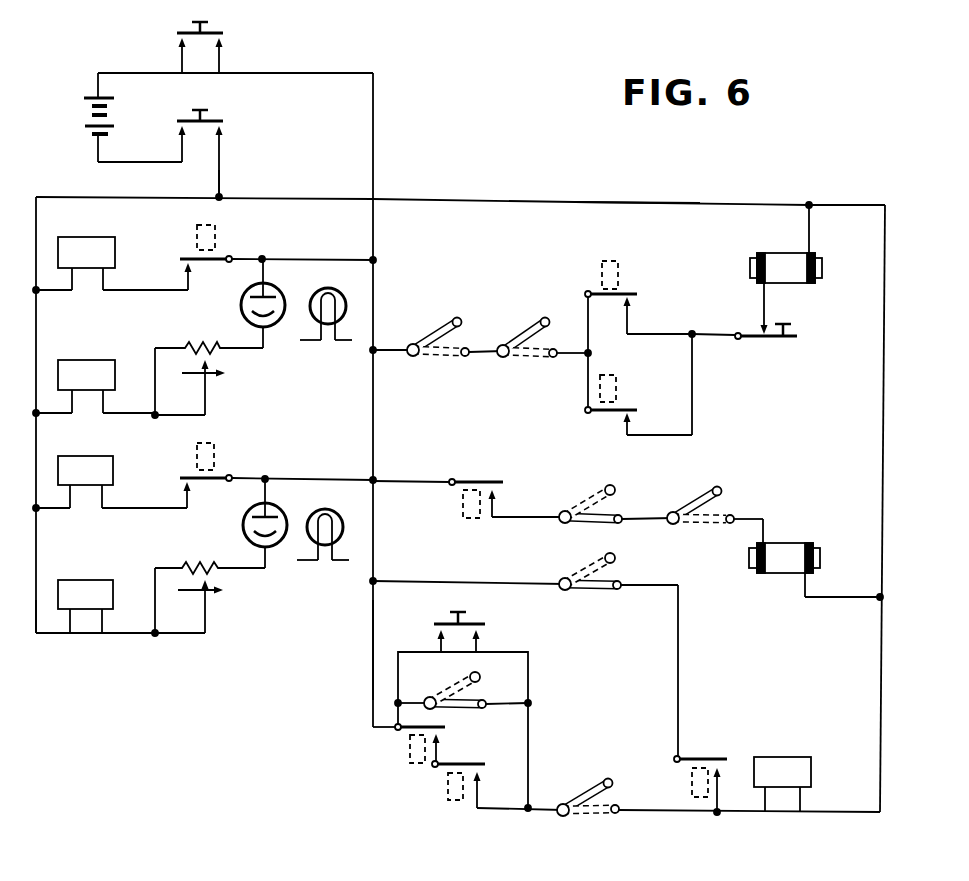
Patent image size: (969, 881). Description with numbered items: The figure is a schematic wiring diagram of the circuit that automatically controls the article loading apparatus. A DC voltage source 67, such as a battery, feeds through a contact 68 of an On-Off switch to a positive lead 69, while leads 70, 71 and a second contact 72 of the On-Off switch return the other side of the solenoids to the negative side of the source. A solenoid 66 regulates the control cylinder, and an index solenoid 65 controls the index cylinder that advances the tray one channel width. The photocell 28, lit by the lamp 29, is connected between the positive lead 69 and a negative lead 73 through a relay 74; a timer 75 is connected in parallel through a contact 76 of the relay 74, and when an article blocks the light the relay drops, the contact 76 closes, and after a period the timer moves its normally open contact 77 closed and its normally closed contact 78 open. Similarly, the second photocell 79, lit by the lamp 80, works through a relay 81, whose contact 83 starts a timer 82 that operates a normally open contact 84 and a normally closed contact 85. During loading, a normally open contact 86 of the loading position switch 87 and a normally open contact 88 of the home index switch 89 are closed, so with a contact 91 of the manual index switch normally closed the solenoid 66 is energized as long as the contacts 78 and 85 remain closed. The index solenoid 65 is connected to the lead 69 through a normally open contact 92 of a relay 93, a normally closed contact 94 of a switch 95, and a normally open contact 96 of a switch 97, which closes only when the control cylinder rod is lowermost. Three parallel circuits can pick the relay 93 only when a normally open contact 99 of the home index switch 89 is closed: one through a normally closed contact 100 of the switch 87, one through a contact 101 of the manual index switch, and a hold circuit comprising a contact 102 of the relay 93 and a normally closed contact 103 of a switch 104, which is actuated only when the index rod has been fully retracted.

The photocell 28 is at (244, 525).
The lamp 29 is at (330, 511).
The solenoid 65 is at (785, 542).
The solenoid 66 is at (790, 252).
The DC voltage source 67 is at (86, 122).
The contact 68 is at (217, 33).
The positive lead 69 is at (371, 642).
The lead 70 is at (575, 202).
The lead 71 is at (219, 175).
The second contact 72 is at (213, 121).
The negative lead 73 is at (36, 633).
The relay 74 is at (87, 582).
The timer 75 is at (87, 460).
The contact 76 is at (186, 476).
The normally open contact 77 is at (469, 764).
The normally closed contact 78 is at (623, 413).
The second photocell 79 is at (242, 296).
The lamp 80 is at (331, 289).
The relay 81 is at (90, 364).
The timer 82 is at (92, 242).
The contact 83 is at (186, 257).
The normally open contact 84 is at (441, 727).
The normally closed contact 85 is at (637, 297).
The normally open contact 86 is at (548, 318).
The loading position switch 87 is at (532, 330).
The normally open contact 88 is at (457, 318).
The home index switch 89 is at (441, 328).
The contact 91 is at (764, 340).
The normally open contact 92 is at (487, 479).
The relay 93 is at (462, 506).
The normally closed contact 94 is at (621, 523).
The switch 95 is at (598, 523).
The normally open contact 96 is at (720, 491).
The switch 97 is at (698, 492).
The normally open contact 99 is at (612, 782).
The normally closed contact 100 is at (486, 708).
The contact 101 is at (471, 624).
The contact 102 is at (712, 757).
The normally closed contact 103 is at (621, 590).
The switch 104 is at (603, 591).